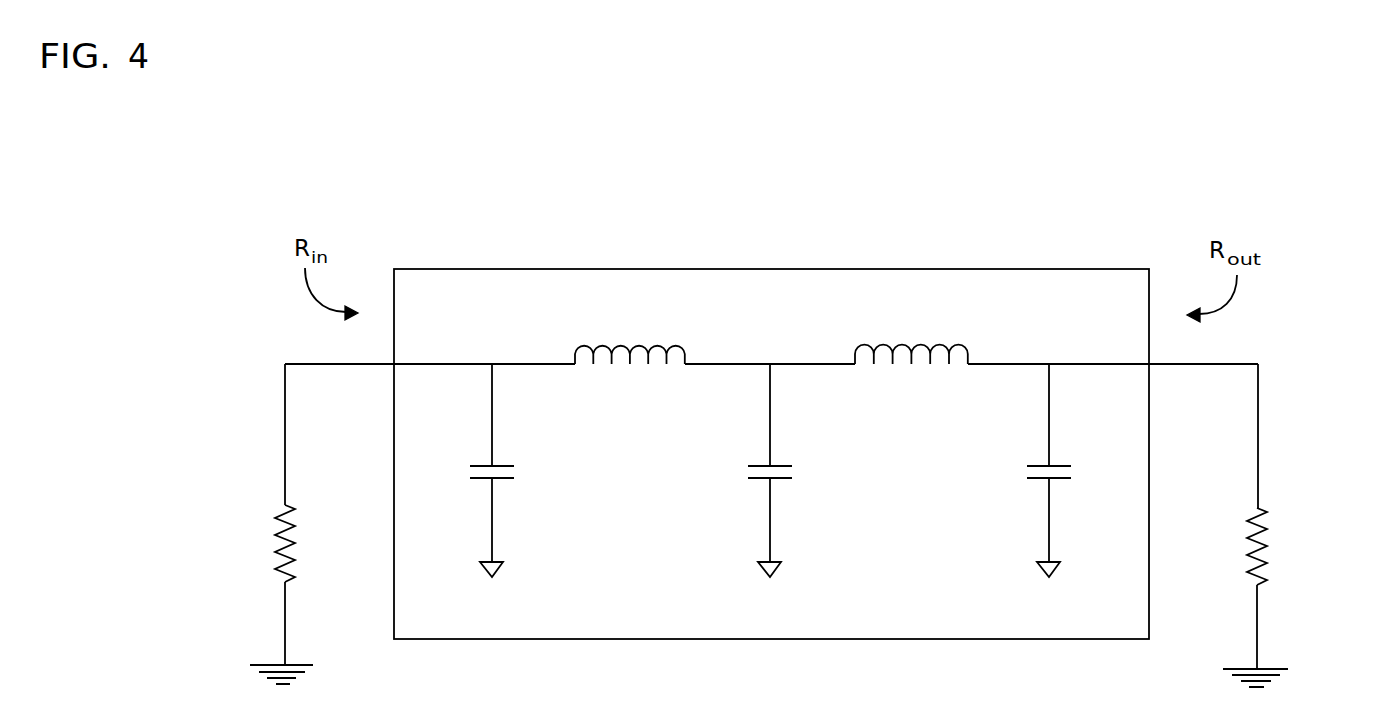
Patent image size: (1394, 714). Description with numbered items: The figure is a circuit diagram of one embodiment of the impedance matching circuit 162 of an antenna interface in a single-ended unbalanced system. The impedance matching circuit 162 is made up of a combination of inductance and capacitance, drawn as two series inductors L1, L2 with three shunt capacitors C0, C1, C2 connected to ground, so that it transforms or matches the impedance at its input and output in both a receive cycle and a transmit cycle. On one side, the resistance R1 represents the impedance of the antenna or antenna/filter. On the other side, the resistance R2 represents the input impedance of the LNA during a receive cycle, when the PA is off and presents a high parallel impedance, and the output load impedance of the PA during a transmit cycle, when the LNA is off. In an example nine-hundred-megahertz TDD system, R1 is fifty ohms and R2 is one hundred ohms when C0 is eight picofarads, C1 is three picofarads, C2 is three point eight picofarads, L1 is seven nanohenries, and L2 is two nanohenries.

The impedance matching circuit 162 is at (730, 269).
The inductor L1 is at (630, 333).
The inductor L2 is at (911, 333).
The capacitor C0 is at (508, 470).
The capacitor C1 is at (786, 470).
The capacitor C2 is at (1065, 470).
The antenna or antenna/filter impedance R1 is at (233, 593).
The LNA input impedance / PA output load impedance R2 is at (1297, 597).